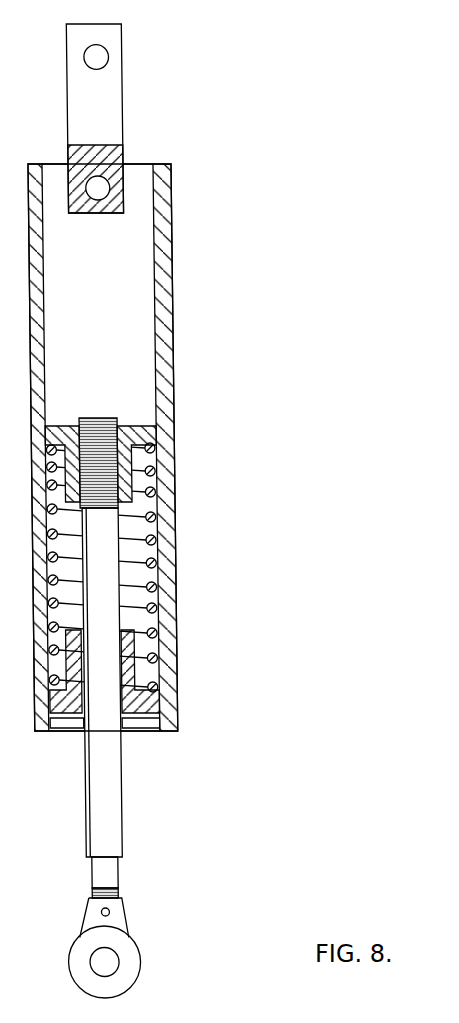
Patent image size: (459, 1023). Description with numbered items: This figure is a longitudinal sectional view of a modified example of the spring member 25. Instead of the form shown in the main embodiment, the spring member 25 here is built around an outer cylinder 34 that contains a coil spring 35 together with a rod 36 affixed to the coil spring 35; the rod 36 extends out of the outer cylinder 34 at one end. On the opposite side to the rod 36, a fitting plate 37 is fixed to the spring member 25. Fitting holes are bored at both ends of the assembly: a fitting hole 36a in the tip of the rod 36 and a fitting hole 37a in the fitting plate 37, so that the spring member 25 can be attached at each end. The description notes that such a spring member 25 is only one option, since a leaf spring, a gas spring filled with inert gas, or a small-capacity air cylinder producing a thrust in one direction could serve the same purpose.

The spring member 25 is at (180, 255).
The outer cylinder 34 is at (172, 338).
The coil spring 35 is at (155, 527).
The rod 36 is at (118, 808).
The fitting hole 36a is at (112, 967).
The fitting plate 37 is at (137, 115).
The fitting hole 37a is at (110, 55).